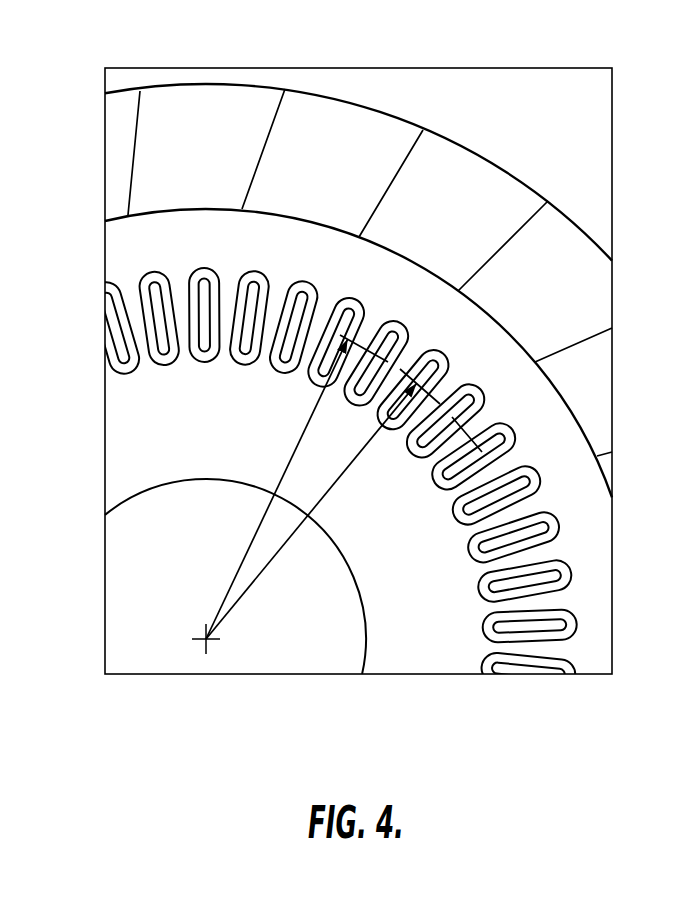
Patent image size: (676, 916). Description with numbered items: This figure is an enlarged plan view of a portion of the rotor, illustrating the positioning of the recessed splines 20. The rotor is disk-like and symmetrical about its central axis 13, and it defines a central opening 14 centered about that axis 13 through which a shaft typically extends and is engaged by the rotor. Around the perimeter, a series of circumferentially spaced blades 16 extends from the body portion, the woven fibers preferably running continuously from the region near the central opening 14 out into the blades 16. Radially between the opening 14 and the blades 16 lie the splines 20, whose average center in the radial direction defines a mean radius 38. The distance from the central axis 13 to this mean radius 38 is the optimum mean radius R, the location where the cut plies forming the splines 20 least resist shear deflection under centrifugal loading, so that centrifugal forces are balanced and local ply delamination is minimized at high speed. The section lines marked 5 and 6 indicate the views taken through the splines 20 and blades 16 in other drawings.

The central axis 13 is at (204, 645).
The central opening 14 is at (138, 540).
The blades 16 is at (363, 133).
The splines 20 is at (148, 272).
The mean radius 38 is at (288, 462).
The optimum mean radius R is at (323, 493).
The section line 5- 5 is at (530, 587).
The section line 6- 6 is at (189, 238).